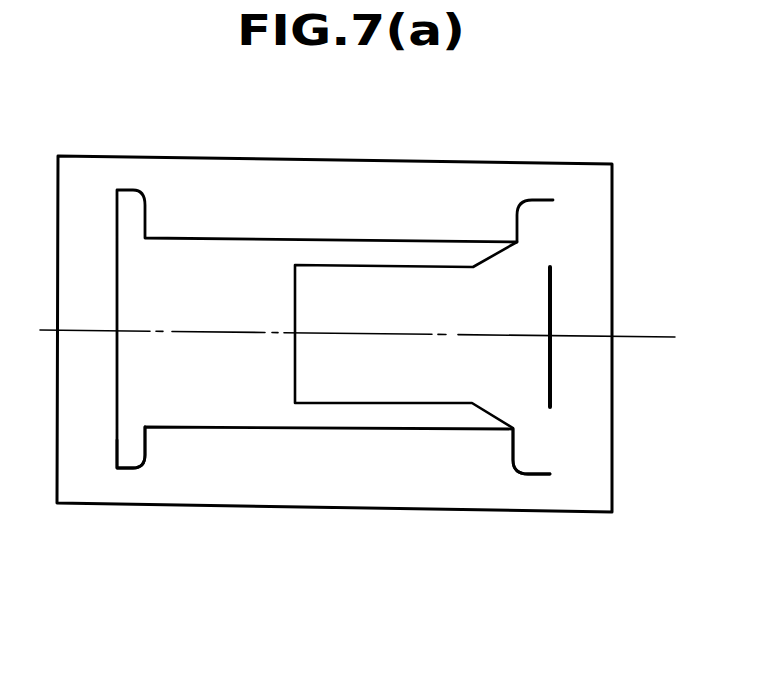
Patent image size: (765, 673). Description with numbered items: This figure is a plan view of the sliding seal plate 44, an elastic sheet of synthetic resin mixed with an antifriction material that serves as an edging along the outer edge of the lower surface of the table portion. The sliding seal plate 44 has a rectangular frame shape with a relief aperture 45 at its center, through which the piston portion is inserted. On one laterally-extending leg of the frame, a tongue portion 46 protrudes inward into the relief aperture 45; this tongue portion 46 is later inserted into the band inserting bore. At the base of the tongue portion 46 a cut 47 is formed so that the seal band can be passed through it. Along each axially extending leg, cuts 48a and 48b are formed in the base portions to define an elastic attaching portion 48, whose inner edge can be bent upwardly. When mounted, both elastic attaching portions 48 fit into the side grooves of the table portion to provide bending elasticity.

The sliding seal plate 44 is at (179, 138).
The relief aperture 45 is at (220, 413).
The tongue portion 46 is at (412, 378).
The cut 47 is at (552, 312).
The elastic attaching portion 48 is at (259, 220).
The cut 48a is at (512, 467).
The cut 48b is at (142, 467).